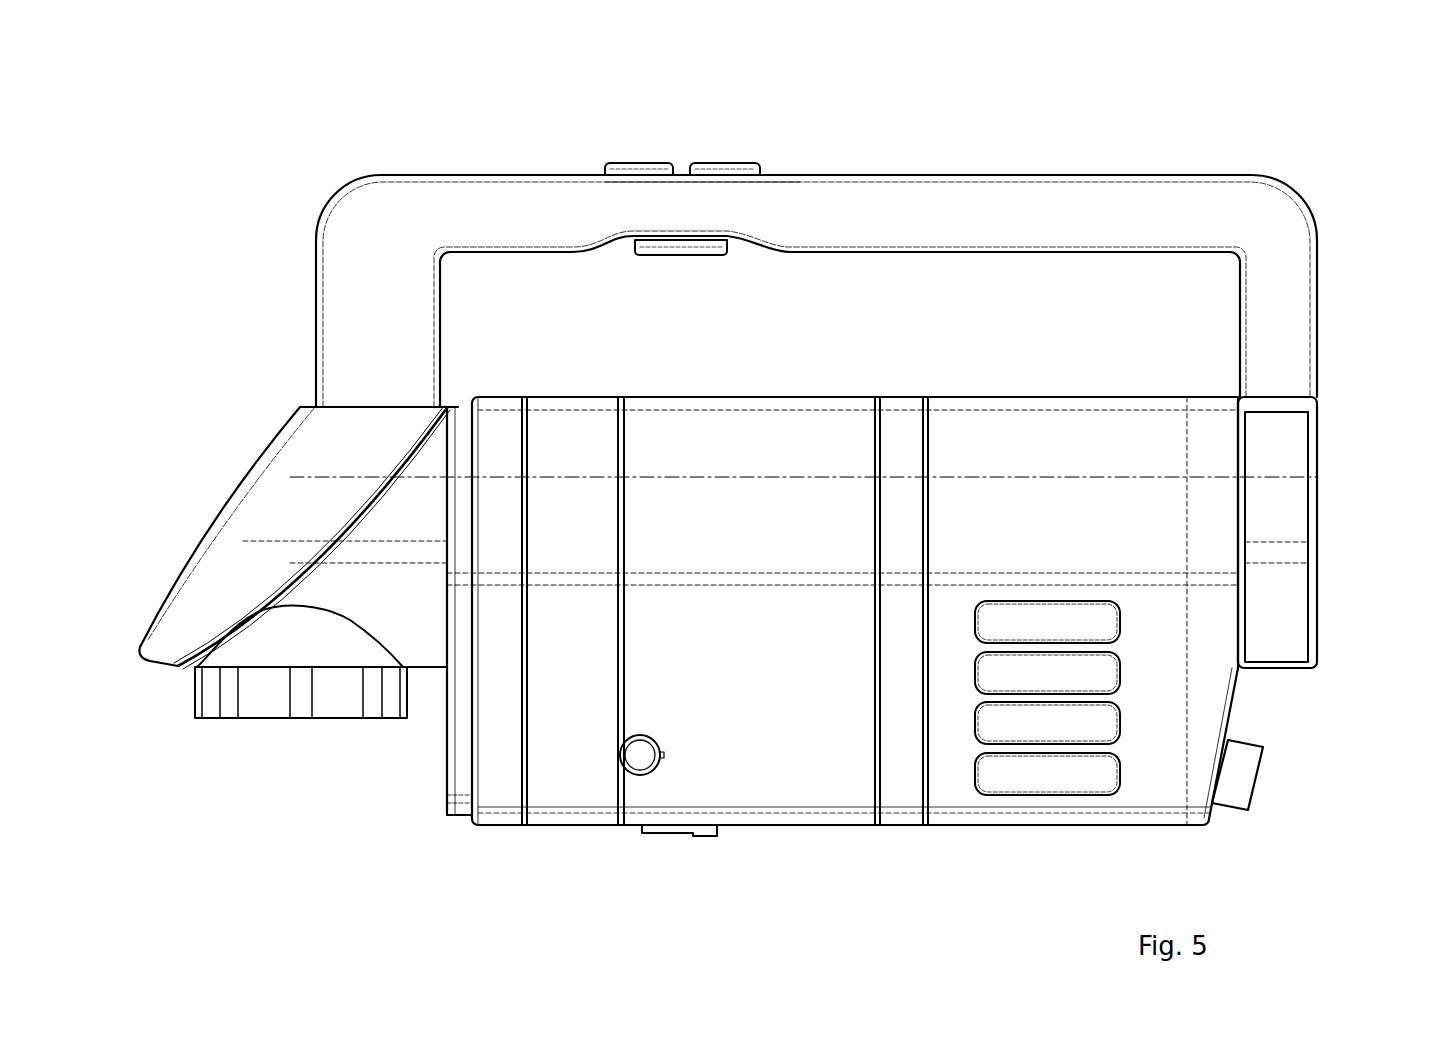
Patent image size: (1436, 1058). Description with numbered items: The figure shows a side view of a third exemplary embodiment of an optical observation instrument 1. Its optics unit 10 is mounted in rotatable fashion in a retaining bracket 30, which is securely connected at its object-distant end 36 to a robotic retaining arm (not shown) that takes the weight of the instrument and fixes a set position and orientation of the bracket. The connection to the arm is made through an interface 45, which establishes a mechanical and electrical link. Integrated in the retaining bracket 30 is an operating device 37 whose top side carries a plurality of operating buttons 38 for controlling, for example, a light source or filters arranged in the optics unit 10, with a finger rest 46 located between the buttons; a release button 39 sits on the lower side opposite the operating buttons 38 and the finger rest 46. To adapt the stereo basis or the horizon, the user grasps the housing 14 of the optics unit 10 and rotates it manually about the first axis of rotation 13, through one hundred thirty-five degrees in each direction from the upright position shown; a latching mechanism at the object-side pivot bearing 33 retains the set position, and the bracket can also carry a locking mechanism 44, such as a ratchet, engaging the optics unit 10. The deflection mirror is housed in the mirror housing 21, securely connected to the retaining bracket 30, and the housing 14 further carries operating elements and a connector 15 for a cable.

The optical observation instrument 1 is at (228, 181).
The optics unit 10 is at (1210, 827).
The first axis of rotation 13 is at (751, 477).
The housing 14 is at (795, 788).
The connector 15 is at (1255, 780).
The mirror housing 21 is at (230, 510).
The retaining bracket 30 is at (987, 198).
The object-side pivot bearing 33 is at (461, 407).
The object-distant end 36 is at (1284, 172).
The operating device 37 is at (765, 152).
The operating buttons 38 is at (636, 163).
The release button 39 is at (683, 258).
The locking mechanism 44 is at (1278, 552).
The interface 45 is at (1305, 497).
The finger rest 46 is at (680, 173).